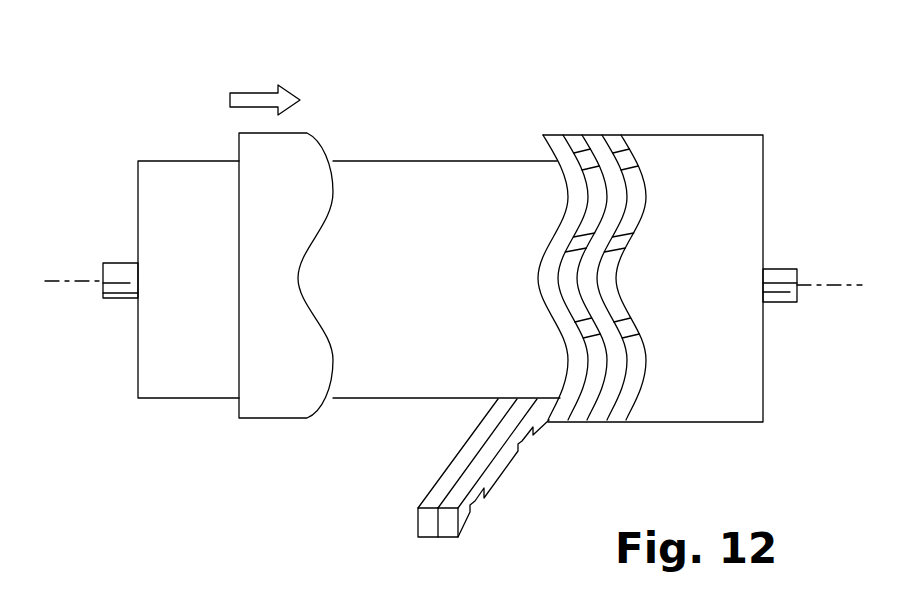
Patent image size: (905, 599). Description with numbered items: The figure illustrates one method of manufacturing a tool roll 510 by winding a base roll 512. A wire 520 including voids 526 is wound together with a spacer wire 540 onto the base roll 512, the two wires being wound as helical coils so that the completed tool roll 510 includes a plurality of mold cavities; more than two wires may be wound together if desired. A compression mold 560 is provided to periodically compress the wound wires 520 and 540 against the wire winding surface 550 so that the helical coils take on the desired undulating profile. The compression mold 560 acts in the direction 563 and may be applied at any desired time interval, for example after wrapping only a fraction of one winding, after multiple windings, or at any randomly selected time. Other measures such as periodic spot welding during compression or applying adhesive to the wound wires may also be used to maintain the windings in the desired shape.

The tool roll 510 is at (685, 90).
The base roll 512 is at (478, 163).
The wire winding surface 550 is at (689, 152).
The compression mold 560 is at (258, 418).
The direction 563 is at (258, 93).
The wire 520 is at (447, 538).
The spacer wire 540 is at (425, 538).
The voids 526 is at (484, 497).